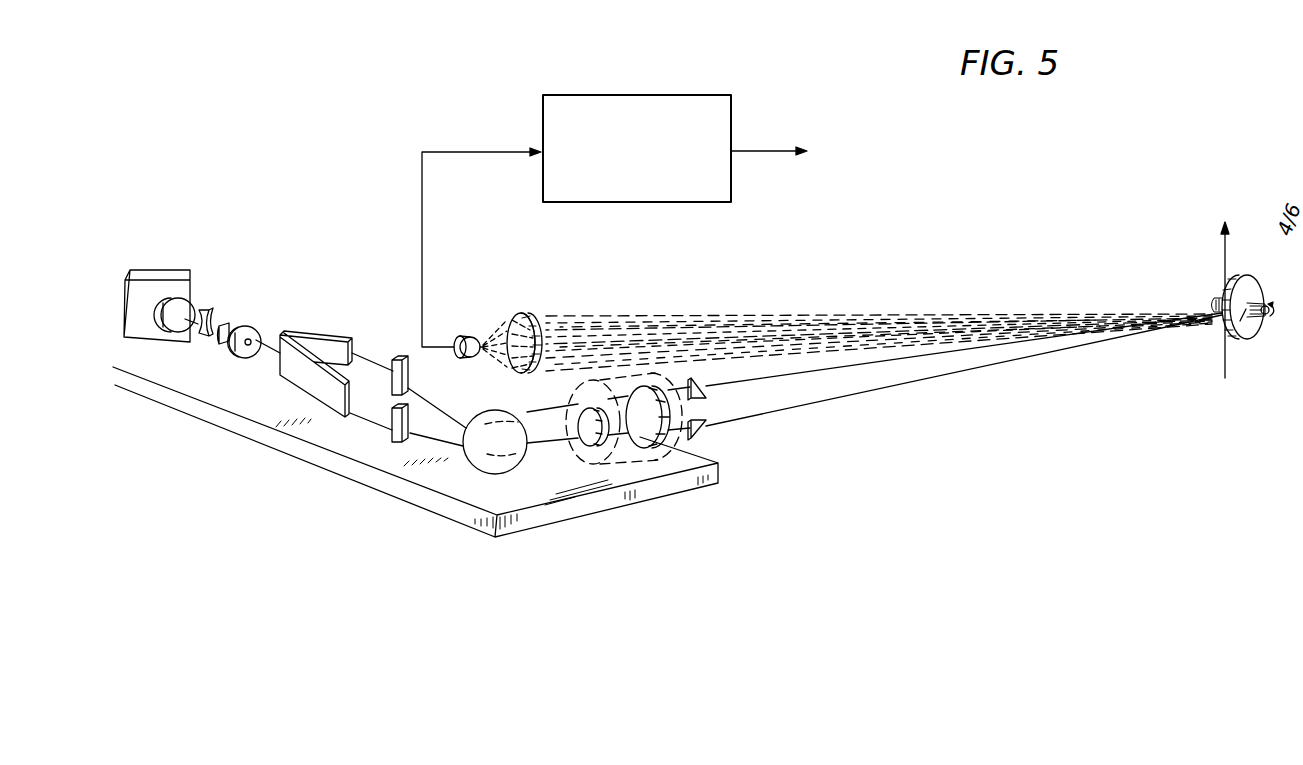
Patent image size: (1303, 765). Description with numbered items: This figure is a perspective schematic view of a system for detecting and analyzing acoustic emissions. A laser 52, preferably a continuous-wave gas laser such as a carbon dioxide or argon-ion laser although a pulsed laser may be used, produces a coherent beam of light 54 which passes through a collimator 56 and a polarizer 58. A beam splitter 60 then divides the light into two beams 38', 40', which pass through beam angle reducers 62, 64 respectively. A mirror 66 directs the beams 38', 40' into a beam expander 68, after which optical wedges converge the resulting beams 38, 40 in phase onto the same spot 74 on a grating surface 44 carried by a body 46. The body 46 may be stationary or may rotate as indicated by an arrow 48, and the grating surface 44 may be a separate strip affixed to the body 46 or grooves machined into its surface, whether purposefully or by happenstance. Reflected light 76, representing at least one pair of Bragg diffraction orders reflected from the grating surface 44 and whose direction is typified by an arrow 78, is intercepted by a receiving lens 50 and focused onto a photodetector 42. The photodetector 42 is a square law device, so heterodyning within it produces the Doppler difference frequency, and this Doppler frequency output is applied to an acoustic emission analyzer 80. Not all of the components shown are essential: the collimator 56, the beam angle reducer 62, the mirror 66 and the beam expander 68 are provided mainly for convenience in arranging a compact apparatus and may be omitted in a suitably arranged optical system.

The beam 38 is at (874, 379).
The beam 38' is at (403, 432).
The beam 40 is at (874, 362).
The beam 40' is at (403, 363).
The photodetector 42 is at (467, 336).
The grating surface 44 is at (1243, 274).
The body 46 is at (1260, 291).
The arrow 48 is at (1222, 265).
The receiving lens 50 is at (528, 313).
The laser 52 is at (185, 273).
The coherent beam of light 54 is at (190, 310).
The collimator 56 is at (192, 343).
The polarizer 58 is at (255, 327).
The beam splitter 60 is at (308, 337).
The beam angle reducer 62 is at (390, 443).
The beam angle reducer 64 is at (400, 357).
The mirror 66 is at (477, 467).
The beam expander 68 is at (640, 457).
The spot 74 is at (1220, 318).
The reflected light 76 is at (946, 323).
The arrow 78 is at (883, 335).
The acoustic emission analyzer 80 is at (733, 106).